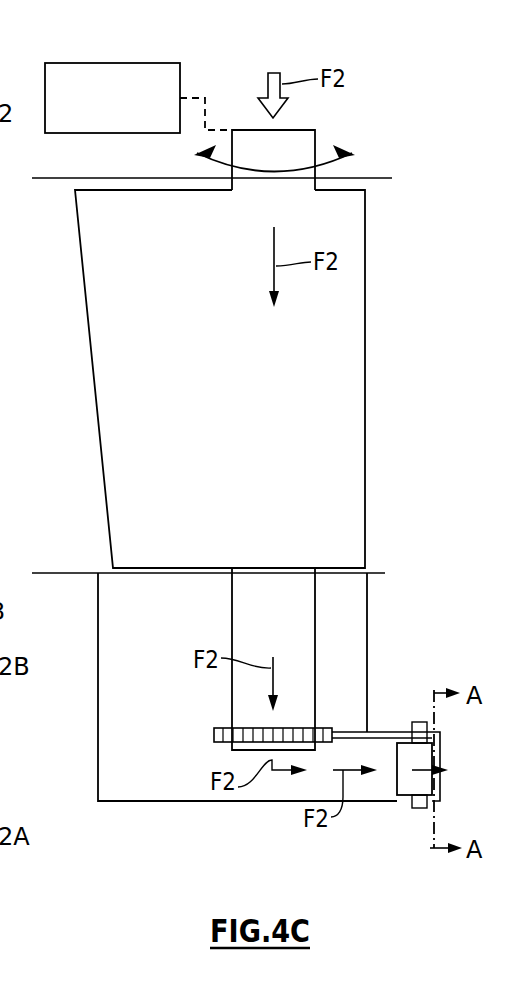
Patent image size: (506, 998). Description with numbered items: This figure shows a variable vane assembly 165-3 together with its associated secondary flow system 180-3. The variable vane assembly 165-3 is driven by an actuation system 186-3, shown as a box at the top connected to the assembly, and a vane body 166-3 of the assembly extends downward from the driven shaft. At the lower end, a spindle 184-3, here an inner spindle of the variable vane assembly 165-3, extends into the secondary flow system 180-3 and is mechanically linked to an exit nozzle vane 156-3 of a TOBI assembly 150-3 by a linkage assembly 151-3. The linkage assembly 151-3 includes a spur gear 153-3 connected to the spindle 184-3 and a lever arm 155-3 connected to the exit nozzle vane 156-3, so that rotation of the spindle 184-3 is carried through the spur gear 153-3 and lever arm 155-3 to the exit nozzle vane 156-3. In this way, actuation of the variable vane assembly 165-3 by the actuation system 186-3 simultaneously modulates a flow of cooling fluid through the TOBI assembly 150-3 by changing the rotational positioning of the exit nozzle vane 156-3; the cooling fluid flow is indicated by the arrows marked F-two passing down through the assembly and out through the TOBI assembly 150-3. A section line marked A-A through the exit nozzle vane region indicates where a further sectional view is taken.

The actuation system 186-3 is at (93, 133).
The variable vane assembly 165-3 is at (373, 153).
The hopper 166-3 is at (212, 382).
The secondary flow system 180-3 is at (384, 602).
The TOBI assembly 150-3 is at (135, 802).
The spindle 184-3 is at (231, 625).
The spur gear 153-3 is at (217, 735).
The lever arm 155-3 is at (373, 737).
The linkage assembly 151-3 is at (342, 705).
The exit nozzle vane 156-3 is at (388, 790).